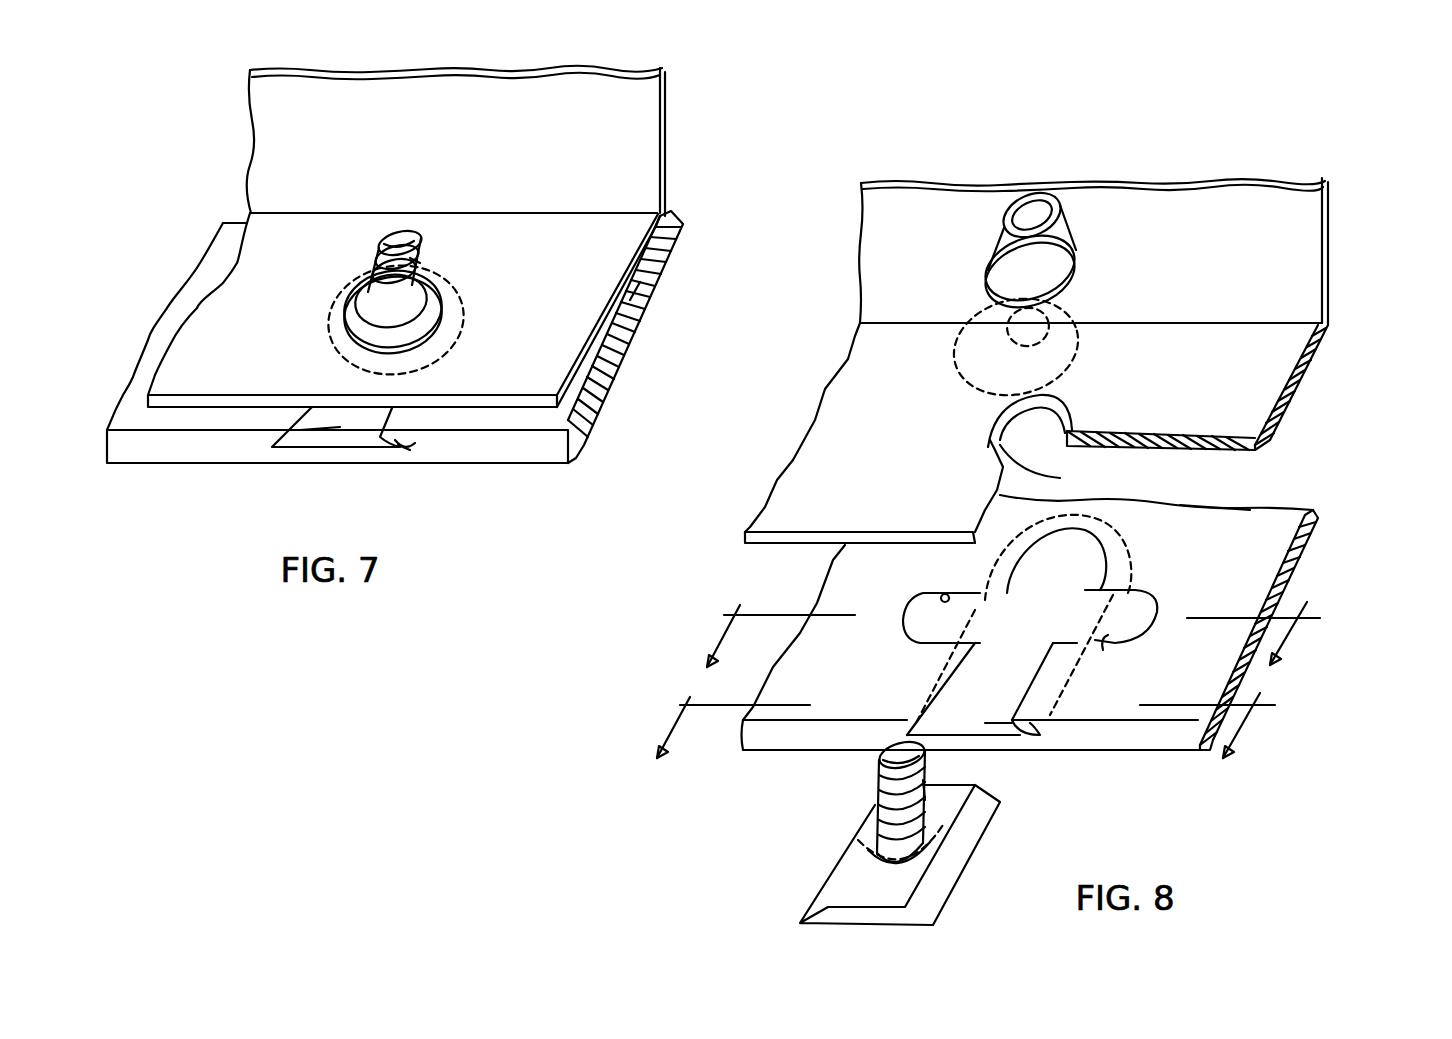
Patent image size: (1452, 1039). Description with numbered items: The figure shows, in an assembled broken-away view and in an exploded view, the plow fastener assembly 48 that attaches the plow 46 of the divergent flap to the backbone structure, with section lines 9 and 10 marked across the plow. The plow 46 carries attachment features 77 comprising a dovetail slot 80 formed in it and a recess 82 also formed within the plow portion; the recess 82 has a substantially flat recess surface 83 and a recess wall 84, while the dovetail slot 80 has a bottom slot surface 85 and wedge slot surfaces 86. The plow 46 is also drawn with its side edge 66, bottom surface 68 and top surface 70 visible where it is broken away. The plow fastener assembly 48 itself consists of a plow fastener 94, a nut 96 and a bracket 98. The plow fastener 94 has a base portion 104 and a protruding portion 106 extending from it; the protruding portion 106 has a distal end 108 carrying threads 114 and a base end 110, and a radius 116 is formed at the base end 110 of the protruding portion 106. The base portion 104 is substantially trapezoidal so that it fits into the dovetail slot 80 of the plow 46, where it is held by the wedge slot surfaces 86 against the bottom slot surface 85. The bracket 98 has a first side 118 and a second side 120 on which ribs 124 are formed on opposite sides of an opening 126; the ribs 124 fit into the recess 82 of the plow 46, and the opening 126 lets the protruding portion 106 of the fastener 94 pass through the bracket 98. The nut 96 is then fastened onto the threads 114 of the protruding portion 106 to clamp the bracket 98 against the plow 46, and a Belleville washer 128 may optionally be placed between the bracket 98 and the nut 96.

In FIG. 8, the section line 9- 9 is at (1020, 621).
In FIG. 8, the section line 10- 10 is at (980, 711).
In FIG. 7, the plow 46 is at (497, 490).
In FIG. 8, the plow 46 is at (1148, 770).
In FIG. 7, the plow fastener assembly 48 is at (557, 280).
In FIG. 8, the plow fastener assembly 48 is at (1335, 483).
In FIG. 7, the side edge of base 66 is at (620, 353).
In FIG. 8, the side edge of base 66 is at (1247, 527).
In FIG. 7, the bottom surface of base 68 is at (543, 465).
In FIG. 8, the bottom surface of base 68 is at (1118, 753).
In FIG. 7, the top surface of base 70 is at (630, 287).
In FIG. 8, the top surface of base 70 is at (1203, 527).
In FIG. 7, the attachment features 77 is at (297, 488).
In FIG. 8, the attachment features 77 is at (787, 810).
In FIG. 7, the dovetail slot 80 is at (357, 433).
In FIG. 8, the dovetail slot 80 is at (960, 713).
In FIG. 8, the recess 82 is at (1137, 613).
In FIG. 8, the recess surface 83 is at (1108, 635).
In FIG. 8, the recess wall 84 is at (937, 597).
In FIG. 7, the bottom slot surface 85 is at (340, 427).
In FIG. 8, the bottom slot surface 85 is at (995, 723).
In FIG. 7, the wedge slot surfaces 86 is at (410, 450).
In FIG. 8, the wedge slot surfaces 86 is at (1040, 740).
In FIG. 8, the plow fastener 94 is at (987, 853).
In FIG. 7, the nut 96 is at (378, 300).
In FIG. 8, the nut 96 is at (997, 240).
In FIG. 7, the bracket 98 is at (680, 153).
In FIG. 8, the bracket 98 is at (1328, 364).
In FIG. 8, the base portion 104 is at (852, 892).
In FIG. 7, the protruding portion 106 is at (396, 232).
In FIG. 8, the protruding portion 106 is at (880, 815).
In FIG. 7, the distal end 108 is at (366, 240).
In FIG. 8, the distal end 108 is at (877, 782).
In FIG. 8, the base end 110 is at (875, 835).
In FIG. 7, the threads 114 is at (423, 260).
In FIG. 8, the threads 114 is at (923, 785).
In FIG. 8, the radius 116 is at (933, 853).
In FIG. 7, the first side 118 is at (547, 228).
In FIG. 8, the first side 118 is at (1237, 341).
In FIG. 8, the second side 120 is at (1290, 415).
In FIG. 8, the ribs 124 is at (1037, 470).
In FIG. 8, the opening 126 is at (1057, 396).
In FIG. 7, the Belleville washer 128 is at (323, 317).
In FIG. 8, the Belleville washer 128 is at (950, 380).